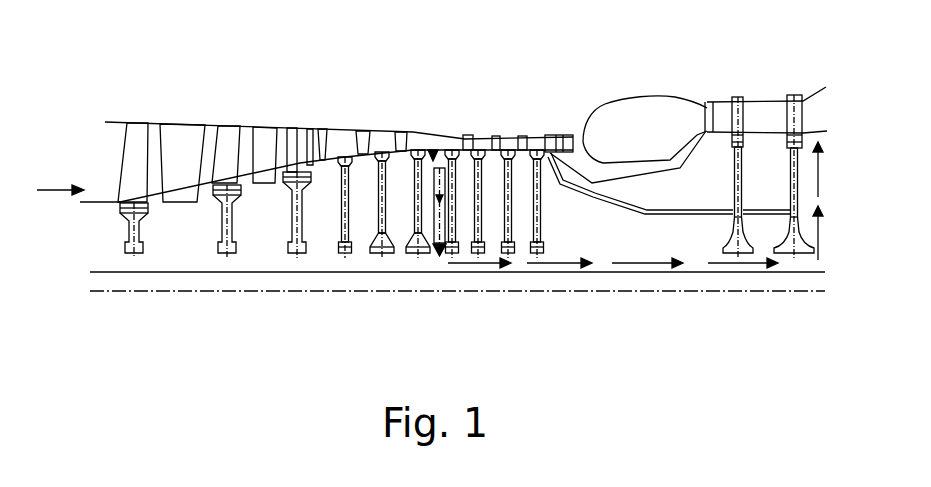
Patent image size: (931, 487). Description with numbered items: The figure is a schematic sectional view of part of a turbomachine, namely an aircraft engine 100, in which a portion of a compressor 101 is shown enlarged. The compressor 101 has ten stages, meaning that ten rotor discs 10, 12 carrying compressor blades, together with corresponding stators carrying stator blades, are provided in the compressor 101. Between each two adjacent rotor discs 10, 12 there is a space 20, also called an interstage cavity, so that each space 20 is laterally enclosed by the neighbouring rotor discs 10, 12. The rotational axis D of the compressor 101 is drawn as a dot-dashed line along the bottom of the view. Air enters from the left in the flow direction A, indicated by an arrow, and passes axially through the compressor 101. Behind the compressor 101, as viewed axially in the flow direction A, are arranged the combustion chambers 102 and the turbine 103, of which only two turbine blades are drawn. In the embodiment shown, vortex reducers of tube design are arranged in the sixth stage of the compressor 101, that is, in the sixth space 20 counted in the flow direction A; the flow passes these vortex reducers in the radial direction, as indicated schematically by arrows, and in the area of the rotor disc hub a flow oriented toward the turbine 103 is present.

The aircraft engine 100 is at (422, 103).
The compressor 101 is at (267, 110).
The combustion chambers 102 is at (628, 117).
The turbine 103 is at (768, 94).
The rotor disc 10 is at (227, 257).
The rotor disc 12 is at (298, 257).
The space 20 is at (195, 241).
The flow direction A is at (60, 177).
The rotational axis D is at (130, 292).